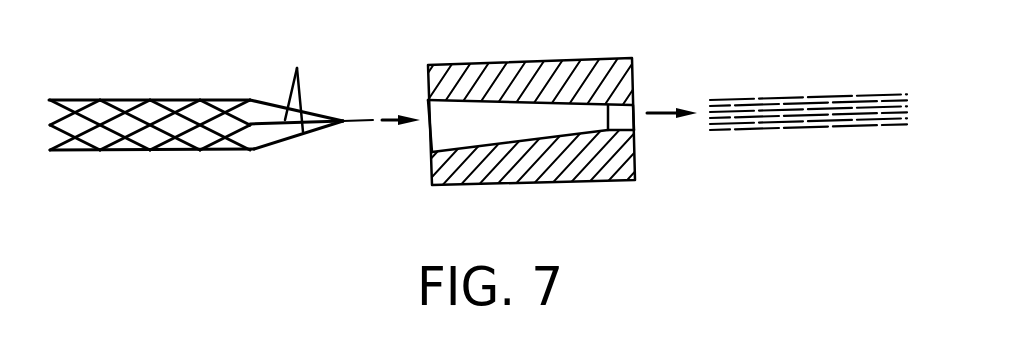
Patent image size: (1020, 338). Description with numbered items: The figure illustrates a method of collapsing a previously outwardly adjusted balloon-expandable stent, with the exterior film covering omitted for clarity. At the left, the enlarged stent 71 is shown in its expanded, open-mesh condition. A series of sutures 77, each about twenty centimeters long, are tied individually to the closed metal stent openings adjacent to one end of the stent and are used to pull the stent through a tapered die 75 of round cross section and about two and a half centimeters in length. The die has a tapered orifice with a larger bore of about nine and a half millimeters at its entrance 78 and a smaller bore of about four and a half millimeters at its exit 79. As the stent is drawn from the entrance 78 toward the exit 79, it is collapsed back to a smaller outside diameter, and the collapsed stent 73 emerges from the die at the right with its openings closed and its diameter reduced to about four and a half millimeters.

The enlarged stent 71 is at (166, 99).
The compressed stent 73 is at (797, 97).
The tapered die 75 is at (535, 62).
The sutures 77 is at (297, 69).
The entrance 78 is at (428, 103).
The exit 79 is at (633, 112).